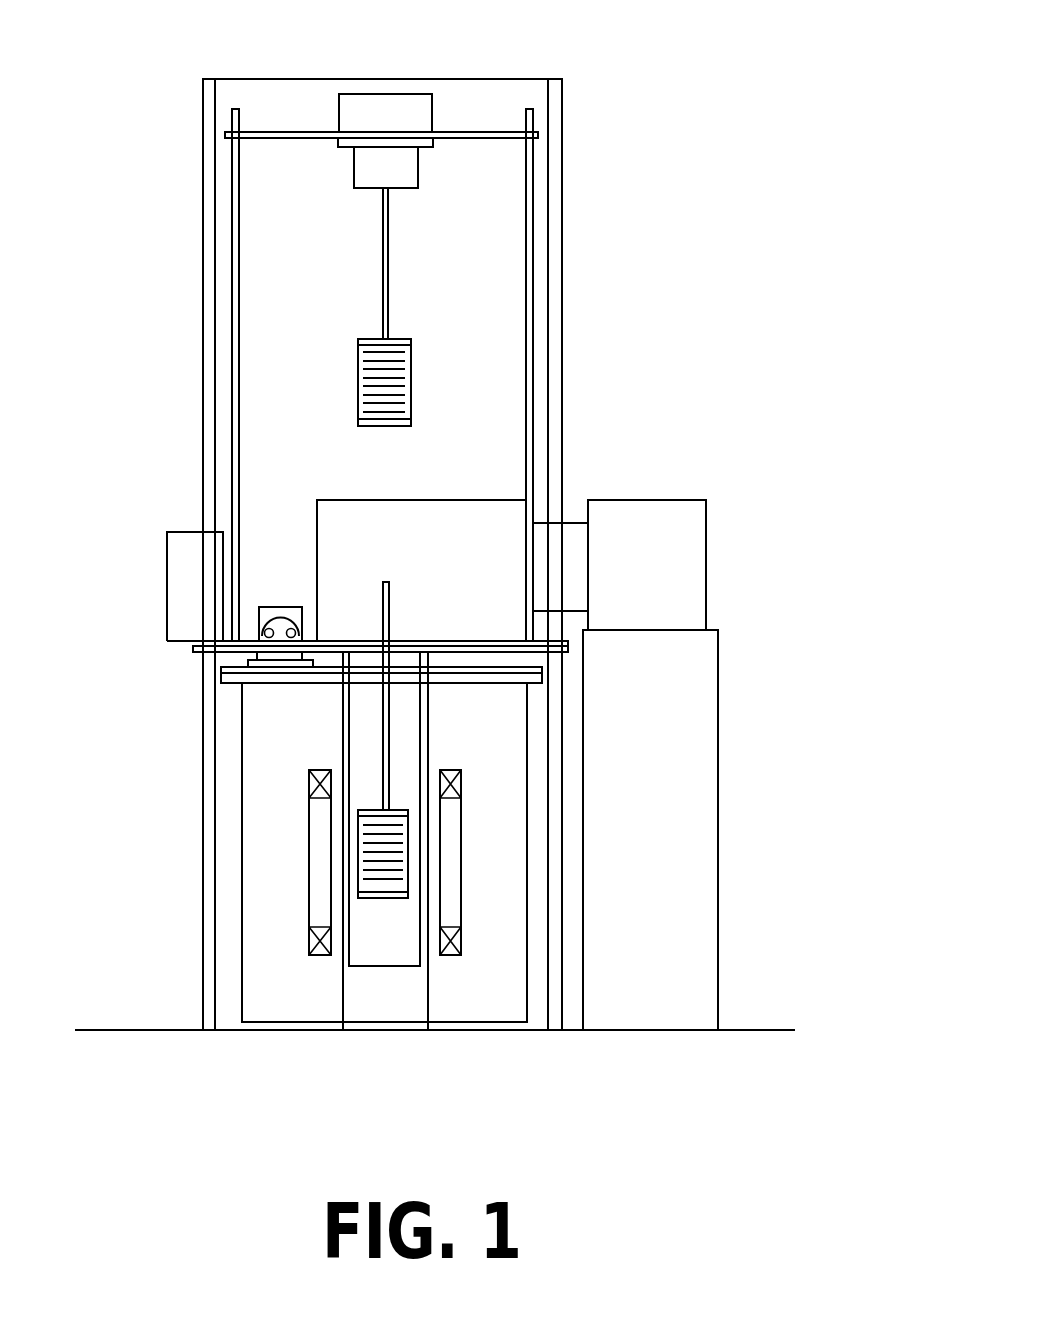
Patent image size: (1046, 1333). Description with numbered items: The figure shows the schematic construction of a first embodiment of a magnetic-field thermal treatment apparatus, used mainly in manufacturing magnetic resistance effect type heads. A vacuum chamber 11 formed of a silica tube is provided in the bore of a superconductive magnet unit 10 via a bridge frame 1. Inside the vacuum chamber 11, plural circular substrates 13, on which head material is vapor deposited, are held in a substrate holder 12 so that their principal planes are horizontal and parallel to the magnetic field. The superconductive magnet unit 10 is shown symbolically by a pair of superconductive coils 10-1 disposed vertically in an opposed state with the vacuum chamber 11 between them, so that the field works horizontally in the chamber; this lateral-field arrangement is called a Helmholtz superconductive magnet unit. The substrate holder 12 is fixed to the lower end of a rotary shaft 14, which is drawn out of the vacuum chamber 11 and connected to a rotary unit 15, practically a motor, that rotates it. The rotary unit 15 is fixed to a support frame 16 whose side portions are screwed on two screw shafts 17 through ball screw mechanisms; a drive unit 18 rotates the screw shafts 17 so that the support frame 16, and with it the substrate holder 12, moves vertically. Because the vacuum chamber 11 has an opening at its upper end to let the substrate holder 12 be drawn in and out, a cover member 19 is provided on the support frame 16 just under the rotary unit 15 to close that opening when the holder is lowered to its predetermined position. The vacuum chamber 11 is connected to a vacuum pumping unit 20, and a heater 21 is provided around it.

The bridge frame 1 is at (193, 646).
The superconductive magnet unit 10 is at (325, 849).
The superconductive coils 10-1 is at (309, 940).
The vacuum chamber 11 is at (372, 966).
The substrate holder 12 is at (302, 329).
The circular substrates 13 is at (400, 388).
The rotary shaft 14 is at (388, 295).
The rotary unit 15 is at (383, 103).
The support frame 16 is at (473, 132).
The screw shafts 17 is at (230, 290).
The drive unit 18 is at (167, 572).
The cover member 19 is at (433, 147).
The vacuum pumping unit 20 is at (638, 500).
The heater 21 is at (435, 970).